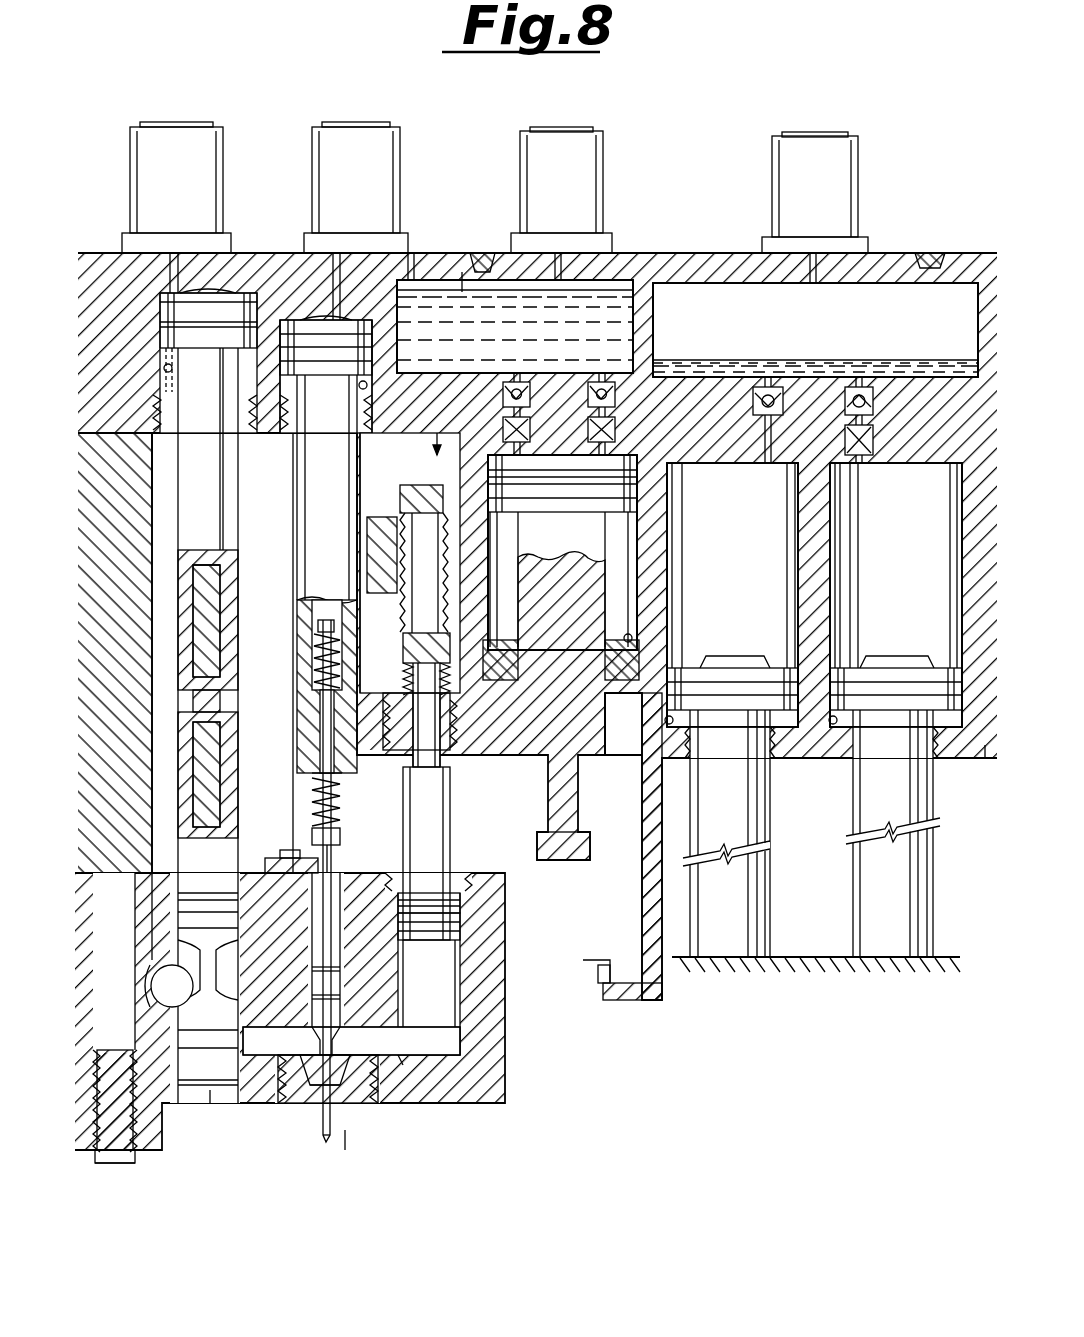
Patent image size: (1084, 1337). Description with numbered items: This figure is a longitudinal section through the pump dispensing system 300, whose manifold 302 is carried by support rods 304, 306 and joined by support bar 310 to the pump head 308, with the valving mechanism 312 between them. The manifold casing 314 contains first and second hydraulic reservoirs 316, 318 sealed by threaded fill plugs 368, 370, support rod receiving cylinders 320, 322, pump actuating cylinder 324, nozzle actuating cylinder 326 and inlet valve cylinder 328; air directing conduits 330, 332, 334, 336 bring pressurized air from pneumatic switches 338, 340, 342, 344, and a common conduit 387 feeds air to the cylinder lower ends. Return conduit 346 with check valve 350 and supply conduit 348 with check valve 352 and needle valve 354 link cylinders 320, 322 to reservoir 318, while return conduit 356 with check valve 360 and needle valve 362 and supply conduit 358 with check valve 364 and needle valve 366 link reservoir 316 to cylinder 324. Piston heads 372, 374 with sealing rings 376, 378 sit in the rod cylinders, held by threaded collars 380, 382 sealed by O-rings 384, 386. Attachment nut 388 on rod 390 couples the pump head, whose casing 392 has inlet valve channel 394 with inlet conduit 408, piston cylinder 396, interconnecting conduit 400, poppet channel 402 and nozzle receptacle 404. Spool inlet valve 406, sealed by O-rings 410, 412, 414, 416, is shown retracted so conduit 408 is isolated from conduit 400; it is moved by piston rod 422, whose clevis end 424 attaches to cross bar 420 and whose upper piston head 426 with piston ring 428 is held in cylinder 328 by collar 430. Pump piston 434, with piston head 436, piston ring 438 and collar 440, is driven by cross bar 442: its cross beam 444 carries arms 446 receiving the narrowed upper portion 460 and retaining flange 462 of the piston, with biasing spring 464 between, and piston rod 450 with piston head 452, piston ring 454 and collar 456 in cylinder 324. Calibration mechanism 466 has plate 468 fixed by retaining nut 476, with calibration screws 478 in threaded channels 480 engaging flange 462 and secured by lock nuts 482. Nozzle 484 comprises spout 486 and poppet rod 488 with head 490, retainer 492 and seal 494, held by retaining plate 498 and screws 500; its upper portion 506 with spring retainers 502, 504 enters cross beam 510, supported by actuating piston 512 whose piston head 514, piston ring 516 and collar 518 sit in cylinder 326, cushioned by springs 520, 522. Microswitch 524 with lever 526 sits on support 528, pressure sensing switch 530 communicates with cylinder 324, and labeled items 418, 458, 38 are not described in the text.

The pump dispensing system 300 is at (846, 96).
The manifold 302 is at (892, 256).
The support rod 304 is at (770, 870).
The support rod 306 is at (930, 870).
The pump head 308 is at (508, 1068).
The support bar 310 is at (135, 565).
The valving mechanism 312 is at (170, 650).
The casing 314 is at (462, 290).
The first hydraulic reservoir 316 is at (478, 270).
The second hydraulic reservoir 318 is at (700, 290).
The support rod receiving cylinder 320 is at (760, 610).
The support rod receiving cylinder 322 is at (920, 594).
The pump actuating cylinder 324 is at (638, 540).
The nozzle actuating cylinder 326 is at (330, 320).
The inlet valve cylinder 328 is at (165, 300).
The air directing conduit 330 is at (132, 262).
The air directing conduit 332 is at (414, 262).
The air directing conduit 334 is at (592, 252).
The air directing conduit 336 is at (840, 250).
The pneumatic single pole, double throw switch 338 is at (224, 140).
The pneumatic single pole, double throw switch 340 is at (400, 135).
The pneumatic single pole, double throw switch 342 is at (604, 140).
The pneumatic single pole, double throw switch 344 is at (858, 148).
The return conduit 346 is at (853, 458).
The supply conduit 348 is at (876, 424).
The check valve 350 is at (753, 402).
The check valve 352 is at (842, 380).
The needle valve 354 is at (876, 442).
The return conduit 356 is at (503, 412).
The supply conduit 358 is at (616, 418).
The check valve 360 is at (505, 385).
The needle valve 362 is at (498, 432).
The check valve 364 is at (598, 385).
The needle valve 366 is at (614, 440).
The threaded fill plug 368 is at (505, 268).
The threaded fill plug 370 is at (928, 262).
The piston head 372 is at (692, 665).
The piston head 374 is at (838, 680).
The sealing ring 376 is at (740, 665).
The sealing ring 378 is at (895, 700).
The threaded collar 380 is at (785, 770).
The threaded collar 382 is at (940, 760).
The O-ring seal 384 is at (840, 745).
The O-ring seal 386 is at (636, 762).
The common conduit 387 is at (842, 760).
The attachment nut 388 is at (153, 1152).
The rod 390 is at (120, 1165).
The casing 392 is at (506, 1096).
The inlet valve channel 394 is at (232, 964).
The piston cylinder 396 is at (462, 960).
The conduit 400 is at (403, 1060).
The nozzle poppet receiving channel 402 is at (258, 905).
The nozzle receptacle 404 is at (305, 1070).
The spool type inlet valve 406 is at (215, 1092).
The inlet conduit 408 is at (155, 920).
The O-ring 410 is at (168, 880).
The O-ring 412 is at (170, 962).
The O-ring 414 is at (235, 1088).
The O-ring 416 is at (250, 1105).
The cylinder bore 418 is at (180, 762).
The cross bar 420 is at (205, 702).
The inlet-valve-actuating piston rod 422 is at (259, 494).
The clevis end 424 is at (240, 602).
The upper piston head 426 is at (200, 290).
The piston ring 428 is at (165, 326).
The threaded collar 430 is at (152, 450).
The pump piston 434 is at (452, 802).
The piston head 436 is at (455, 930).
The piston ring 438 is at (458, 910).
The threaded collar 440 is at (460, 878).
The pump-piston-actuating cross bar 442 is at (566, 862).
The transverse cross beam 444 is at (576, 786).
The arm 446 is at (508, 745).
The piston rod 450 is at (640, 560).
The piston head 452 is at (640, 478).
The piston ring 454 is at (640, 496).
The threaded collar 456 is at (442, 745).
The nut 458 is at (403, 705).
The narrowed upper portion 460 is at (388, 750).
The retaining flange 462 is at (403, 652).
The biasing spring 464 is at (405, 676).
The calibration mechanism 466 is at (437, 433).
The calibration plate 468 is at (505, 455).
The retaining nut 476 is at (398, 496).
The calibration screw 478 is at (415, 485).
The threaded channel 480 is at (410, 617).
The lock nut 482 is at (408, 515).
The nozzle 484 is at (346, 1135).
The spout 486 is at (355, 1097).
The nozzle poppet rod 488 is at (335, 955).
The head 490 is at (327, 1145).
The retainer 492 is at (396, 1056).
The seal 494 is at (312, 1102).
The retaining plate 498 is at (302, 845).
The screw 500 is at (302, 872).
The spring retainer 502 is at (344, 836).
The spring retainer 504 is at (312, 633).
The upper rod portion 506 is at (312, 742).
The cross beam 510 is at (405, 735).
The actuating piston 512 is at (295, 452).
The piston head 514 is at (332, 340).
The piston ring 516 is at (318, 375).
The threaded collar 518 is at (300, 375).
The cushioning spring 520 is at (312, 668).
The cushioning spring 522 is at (312, 800).
The limit sensing microswitch 524 is at (615, 1000).
The activating lever 526 is at (592, 978).
The support 528 is at (662, 990).
The pressure sensing switch 530 is at (616, 456).
The rod end 38 is at (985, 762).